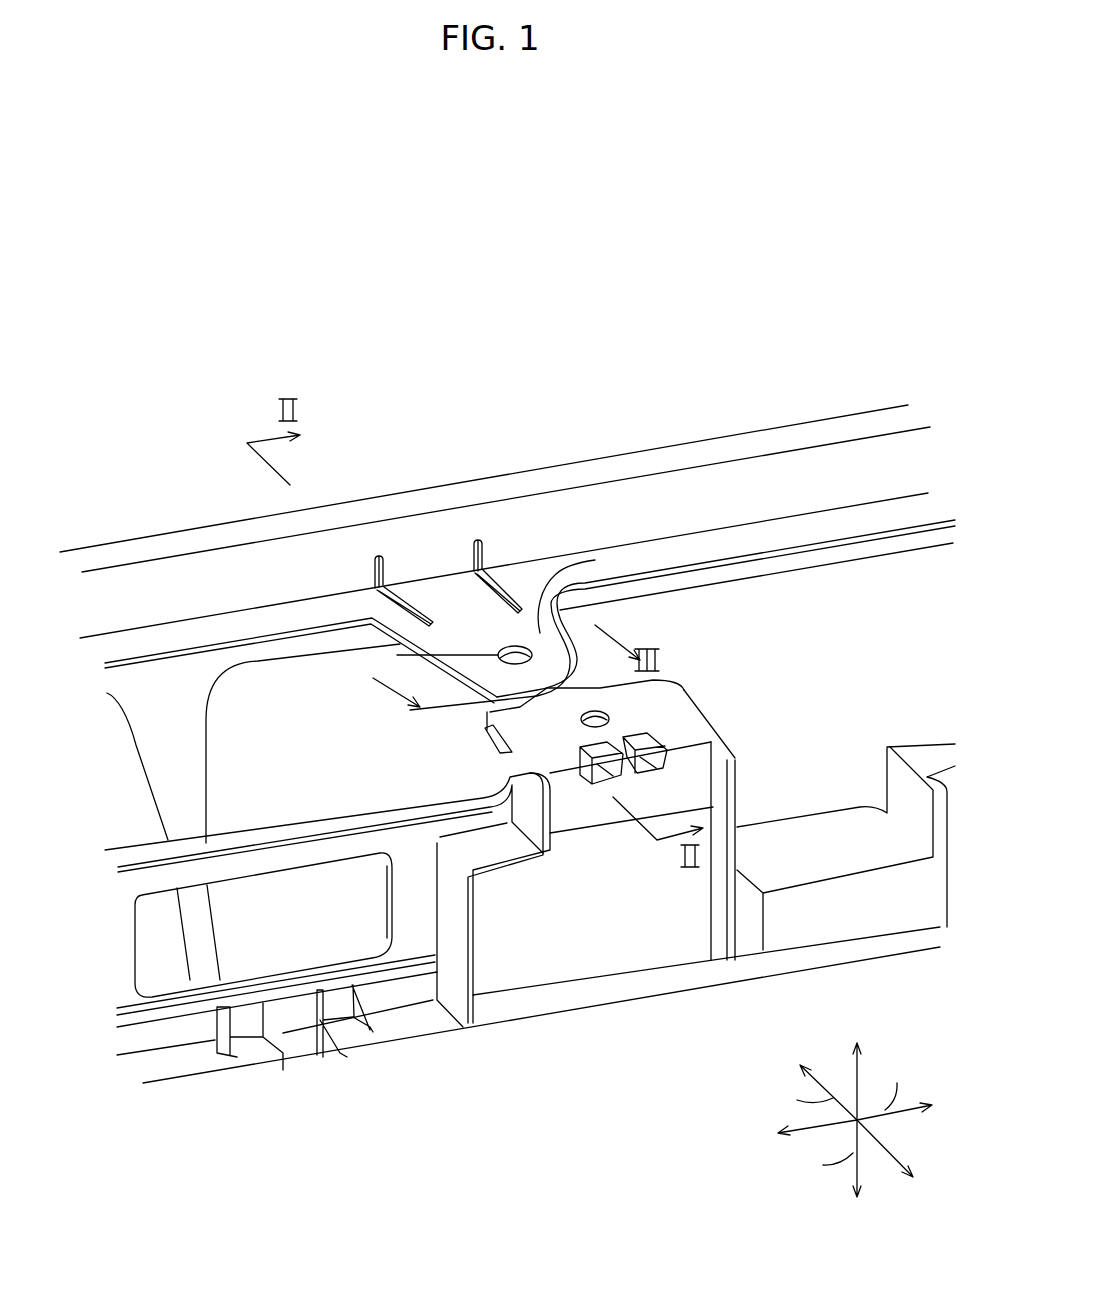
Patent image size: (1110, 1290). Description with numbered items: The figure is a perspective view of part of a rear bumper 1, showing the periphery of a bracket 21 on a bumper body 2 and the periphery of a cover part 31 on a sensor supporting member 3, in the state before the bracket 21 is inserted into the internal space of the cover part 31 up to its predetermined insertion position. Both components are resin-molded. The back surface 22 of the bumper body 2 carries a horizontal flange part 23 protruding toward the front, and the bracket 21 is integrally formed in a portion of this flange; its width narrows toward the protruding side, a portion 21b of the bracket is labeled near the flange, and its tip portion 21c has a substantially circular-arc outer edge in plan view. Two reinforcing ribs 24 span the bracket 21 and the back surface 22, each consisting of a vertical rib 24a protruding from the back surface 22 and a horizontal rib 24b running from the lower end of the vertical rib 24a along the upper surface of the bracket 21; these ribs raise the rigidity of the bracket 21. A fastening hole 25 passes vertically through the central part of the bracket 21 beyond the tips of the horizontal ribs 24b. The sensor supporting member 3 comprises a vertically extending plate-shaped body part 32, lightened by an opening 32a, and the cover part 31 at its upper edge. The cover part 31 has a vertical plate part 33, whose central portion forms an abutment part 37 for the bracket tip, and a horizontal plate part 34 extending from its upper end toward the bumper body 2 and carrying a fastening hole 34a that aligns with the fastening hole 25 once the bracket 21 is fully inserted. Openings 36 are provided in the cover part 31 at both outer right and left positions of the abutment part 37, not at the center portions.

The rear bumper 1 is at (141, 364).
The bumper body 2 is at (848, 479).
The bracket 21 is at (578, 622).
The bent portion 21b is at (388, 652).
The tip portion 21c is at (492, 710).
The back surface 22 is at (683, 500).
The horizontal flange part 23 is at (777, 532).
The reinforcing rib 24 is at (400, 582).
The vertical rib 24a is at (473, 553).
The horizontal rib 24b is at (420, 612).
The fastening hole 25 is at (505, 648).
The sensor supporting member 3 is at (550, 962).
The cover part 31 is at (693, 682).
The body part 32 is at (640, 947).
The opening 32a is at (283, 873).
The vertical plate part 33 is at (587, 805).
The horizontal plate part 34 is at (480, 742).
The fastening hole 34a is at (610, 717).
The opening 36 is at (622, 775).
The abutment part 37 is at (668, 748).